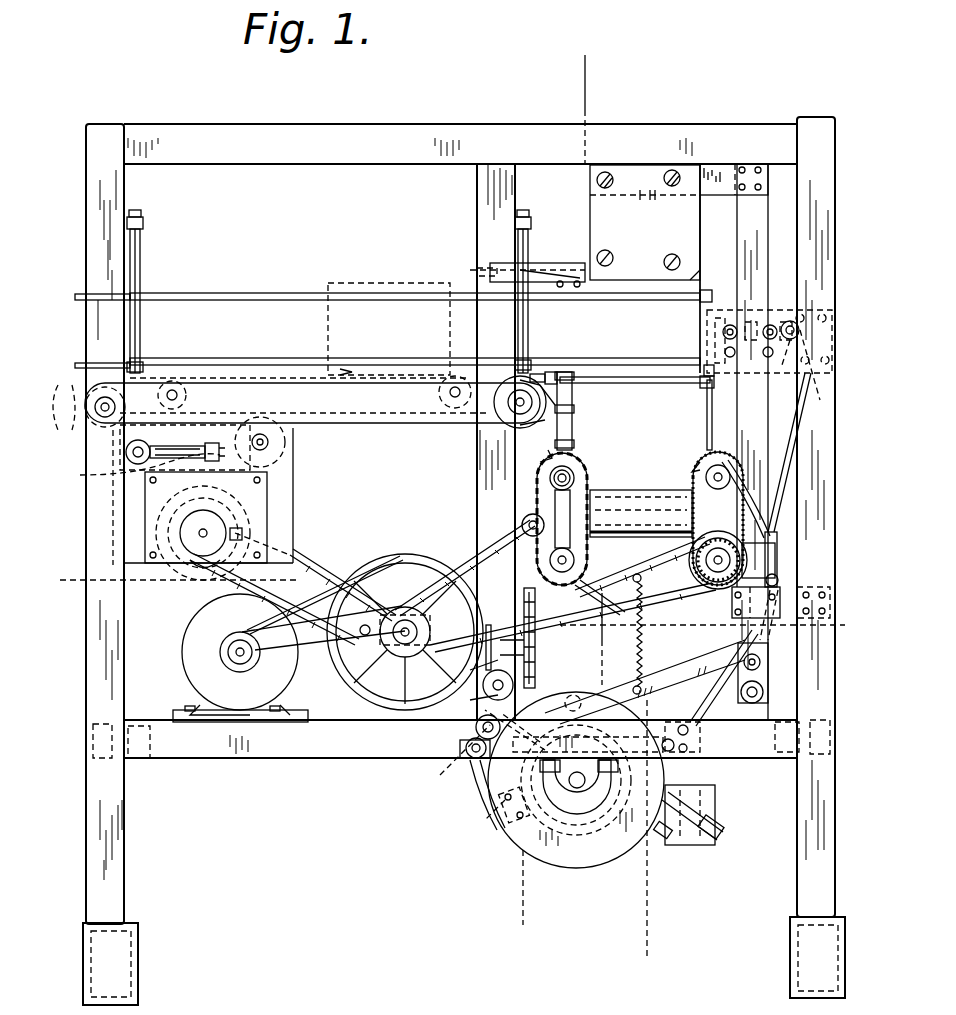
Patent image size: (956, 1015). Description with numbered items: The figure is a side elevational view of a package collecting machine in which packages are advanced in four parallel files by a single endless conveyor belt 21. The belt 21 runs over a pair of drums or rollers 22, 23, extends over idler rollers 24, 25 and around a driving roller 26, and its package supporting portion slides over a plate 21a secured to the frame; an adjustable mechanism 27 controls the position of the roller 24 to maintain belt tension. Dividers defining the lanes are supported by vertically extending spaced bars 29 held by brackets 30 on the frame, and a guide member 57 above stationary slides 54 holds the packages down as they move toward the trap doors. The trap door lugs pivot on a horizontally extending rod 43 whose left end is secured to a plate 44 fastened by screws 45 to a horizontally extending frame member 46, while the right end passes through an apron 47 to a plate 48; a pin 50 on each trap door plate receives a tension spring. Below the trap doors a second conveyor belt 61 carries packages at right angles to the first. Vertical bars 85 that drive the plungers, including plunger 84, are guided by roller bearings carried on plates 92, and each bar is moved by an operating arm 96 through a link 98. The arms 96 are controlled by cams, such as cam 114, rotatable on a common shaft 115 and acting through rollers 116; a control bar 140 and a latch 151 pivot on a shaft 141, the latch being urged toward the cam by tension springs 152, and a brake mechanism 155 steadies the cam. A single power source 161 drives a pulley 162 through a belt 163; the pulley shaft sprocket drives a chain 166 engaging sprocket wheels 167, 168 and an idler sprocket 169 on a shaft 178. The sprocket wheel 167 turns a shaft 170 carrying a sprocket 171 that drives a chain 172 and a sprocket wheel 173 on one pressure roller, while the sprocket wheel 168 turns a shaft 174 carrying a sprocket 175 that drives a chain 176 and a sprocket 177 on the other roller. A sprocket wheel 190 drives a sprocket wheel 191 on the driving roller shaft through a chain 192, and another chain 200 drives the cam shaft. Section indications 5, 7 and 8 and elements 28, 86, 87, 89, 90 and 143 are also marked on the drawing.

The section line 5- 5 is at (70, 565).
The section line 7- 7 is at (608, 65).
The section line 8- 8 is at (555, 97).
The conveyor belt 21 is at (292, 360).
The plate 21a is at (150, 385).
The roller 22 is at (75, 382).
The roller 23 is at (552, 422).
The idler roller 24 is at (108, 467).
The idler roller 25 is at (268, 448).
The driving roller 26 is at (180, 565).
The adjustable mechanism 27 is at (211, 446).
The upper guide rod 28 is at (246, 293).
The vertically extending spaced bars 29 is at (143, 280).
The brackets 30 is at (146, 224).
The horizontally extending rod 43 is at (640, 383).
The plate 44 is at (575, 422).
The screws 45 is at (576, 404).
The horizontally extending frame member 46 is at (460, 418).
The apron 47 is at (707, 416).
The plate 48 is at (711, 315).
The pin 50 is at (716, 388).
The stationary slides 54 is at (568, 370).
The guide member 57 is at (569, 266).
The conveyor belt 61 is at (643, 490).
The plunger 84 is at (682, 241).
The vertical bars 85 is at (746, 225).
The bracket 86 is at (719, 165).
The bolts 87 is at (758, 168).
The screws 89 is at (606, 170).
The screws 90 is at (608, 256).
The plates 92 is at (726, 606).
The operating arm 96 is at (660, 675).
The link 98 is at (765, 670).
The cam 114 is at (585, 868).
The shaft 115 is at (610, 807).
The roller 116 is at (596, 690).
The control bar 140 is at (700, 700).
The shaft 141 is at (466, 775).
The rod 143 is at (790, 491).
The latch 151 is at (480, 796).
The tension springs 152 is at (458, 760).
The brake mechanism 155 is at (715, 795).
The power source 161 is at (185, 652).
The pulley 162 is at (402, 558).
The belt 163 is at (308, 563).
The chain 166 is at (440, 580).
The sprocket wheel 167 is at (695, 565).
The sprocket wheel 168 is at (595, 577).
The idler sprocket 169 is at (522, 524).
The shaft 170 is at (745, 563).
The sprocket 171 is at (668, 606).
The chain 172 is at (736, 500).
The sprocket wheel 173 is at (707, 463).
The shaft 174 is at (586, 596).
The sprocket 175 is at (537, 598).
The chain 176 is at (586, 494).
The sprocket 177 is at (568, 472).
The shaft 178 is at (540, 501).
The sprocket wheel 190 is at (304, 648).
The sprocket wheel 191 is at (215, 533).
The chain 192 is at (337, 577).
The chain 200 is at (530, 810).